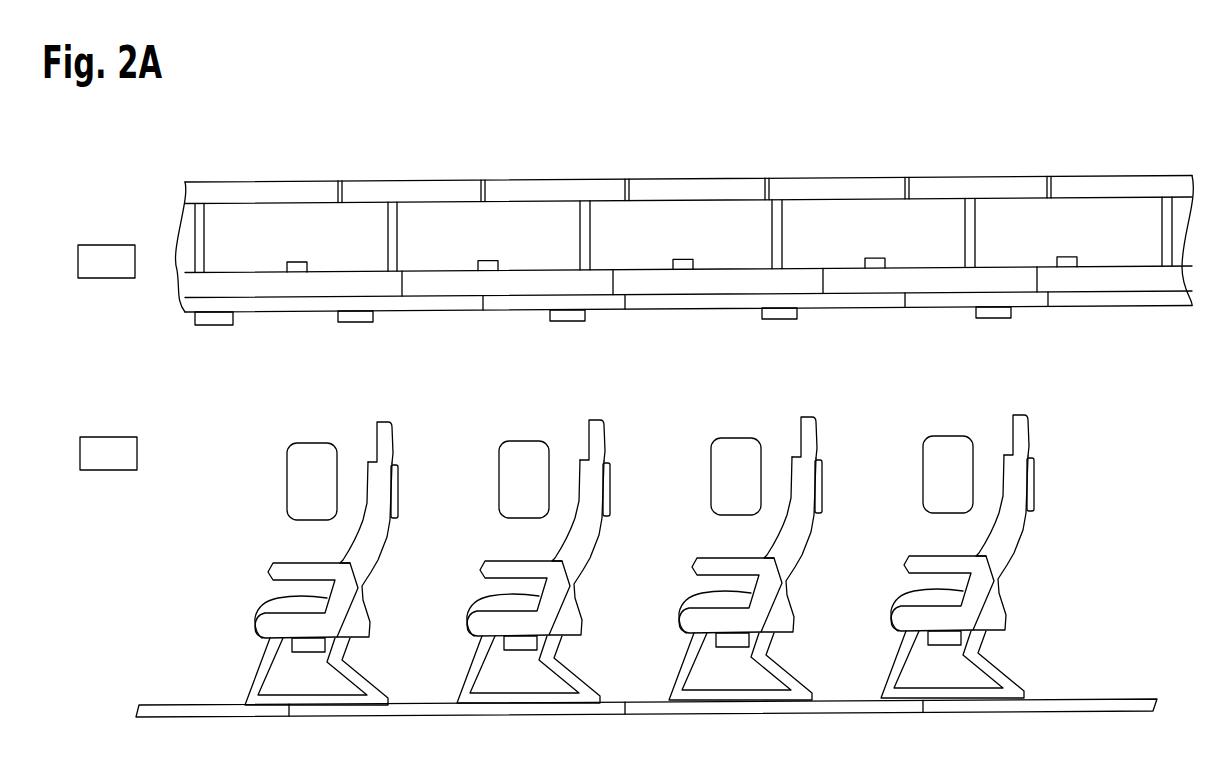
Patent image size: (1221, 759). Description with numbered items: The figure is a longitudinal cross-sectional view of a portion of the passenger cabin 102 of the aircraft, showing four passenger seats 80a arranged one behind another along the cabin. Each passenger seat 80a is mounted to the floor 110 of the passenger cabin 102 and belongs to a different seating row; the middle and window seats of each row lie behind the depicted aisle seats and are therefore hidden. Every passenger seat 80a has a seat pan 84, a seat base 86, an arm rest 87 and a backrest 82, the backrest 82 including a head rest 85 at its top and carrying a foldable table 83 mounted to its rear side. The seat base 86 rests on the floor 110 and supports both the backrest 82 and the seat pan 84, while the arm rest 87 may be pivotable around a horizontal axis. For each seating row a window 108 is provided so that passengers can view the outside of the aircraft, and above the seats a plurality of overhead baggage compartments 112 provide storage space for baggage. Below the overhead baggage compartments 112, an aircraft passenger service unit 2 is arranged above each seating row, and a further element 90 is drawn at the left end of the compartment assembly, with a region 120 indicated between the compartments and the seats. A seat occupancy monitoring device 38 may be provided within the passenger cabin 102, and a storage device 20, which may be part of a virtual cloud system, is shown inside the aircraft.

The aircraft passenger service unit 2 is at (335, 320).
The storage device 20 is at (107, 257).
The seat occupancy monitoring device 38 is at (103, 458).
The passenger seat 80a is at (381, 412).
The backrest 82 is at (375, 527).
The foldable table 83 is at (402, 469).
The seat pan 84 is at (266, 611).
The head rest 85 is at (385, 432).
The seat base 86 is at (362, 664).
The arm rest 87 is at (312, 571).
The module 90 is at (196, 318).
The passenger cabin 102 is at (189, 564).
The window 108 is at (295, 470).
The floor 110 is at (1107, 697).
The overhead baggage compartment 112 is at (323, 222).
The interface region 120 is at (359, 338).